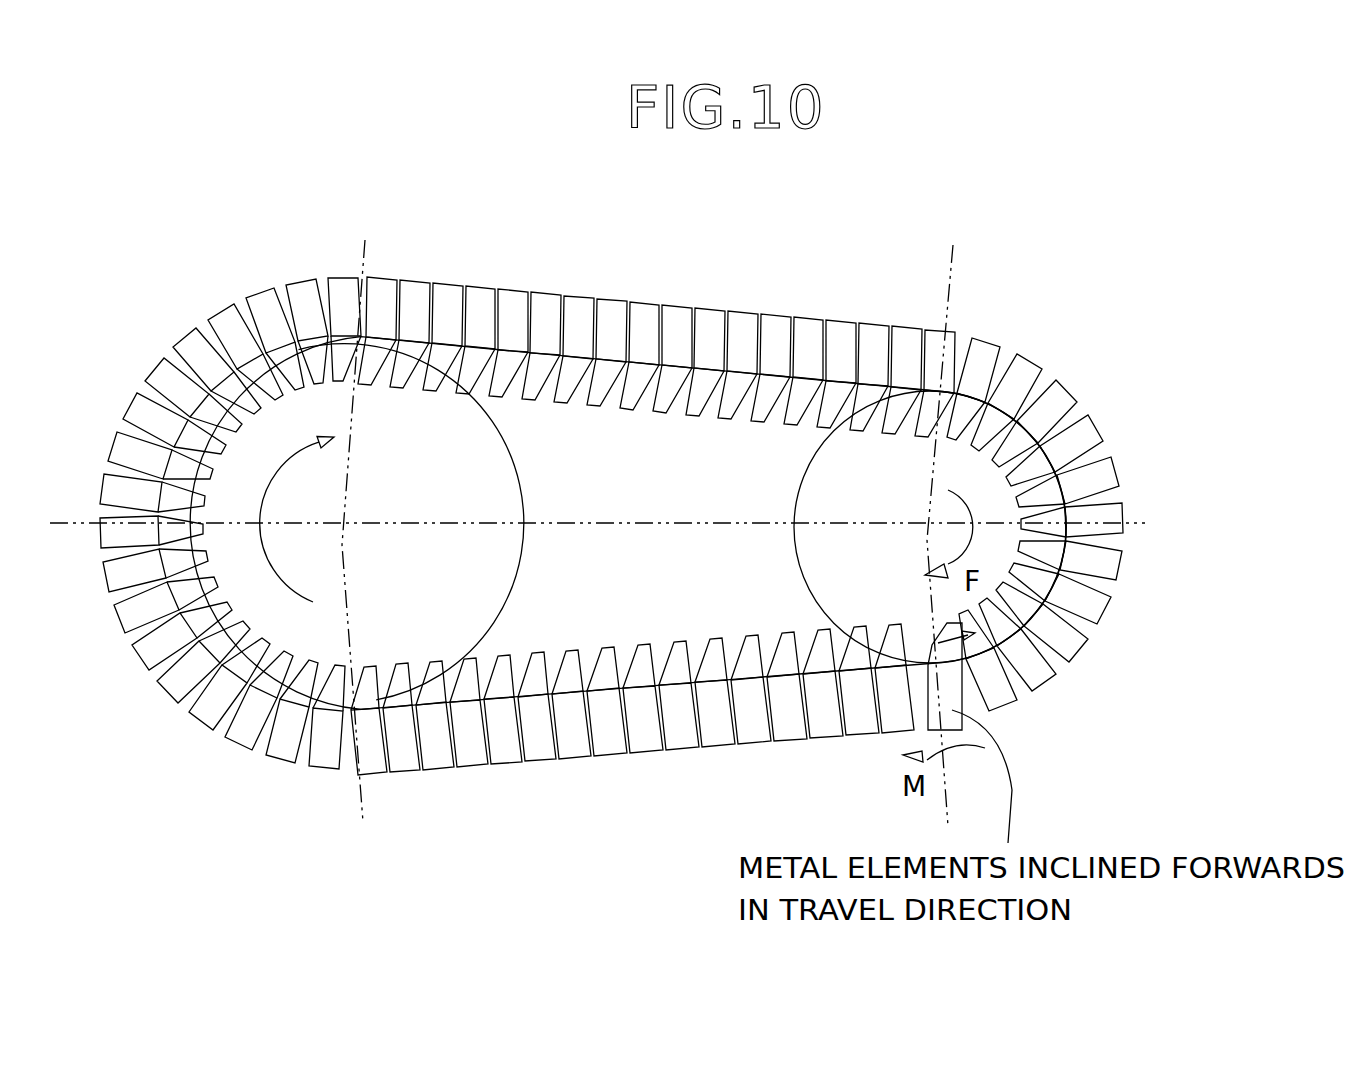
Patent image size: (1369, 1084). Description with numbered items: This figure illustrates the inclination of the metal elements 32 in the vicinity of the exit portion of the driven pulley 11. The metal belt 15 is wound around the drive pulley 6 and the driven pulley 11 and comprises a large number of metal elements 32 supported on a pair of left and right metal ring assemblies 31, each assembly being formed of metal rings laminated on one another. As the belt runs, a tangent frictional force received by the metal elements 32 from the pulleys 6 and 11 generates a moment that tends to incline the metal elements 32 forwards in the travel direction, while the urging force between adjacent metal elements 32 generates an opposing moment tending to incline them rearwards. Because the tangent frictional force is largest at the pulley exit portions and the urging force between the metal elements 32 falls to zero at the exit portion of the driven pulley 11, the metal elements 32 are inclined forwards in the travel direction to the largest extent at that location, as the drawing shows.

The drive pulley 6 is at (519, 470).
The driven pulley 11 is at (800, 490).
The metal belt 15 is at (611, 519).
The metal ring assembly 31 is at (606, 652).
The metal element 32 is at (476, 303).